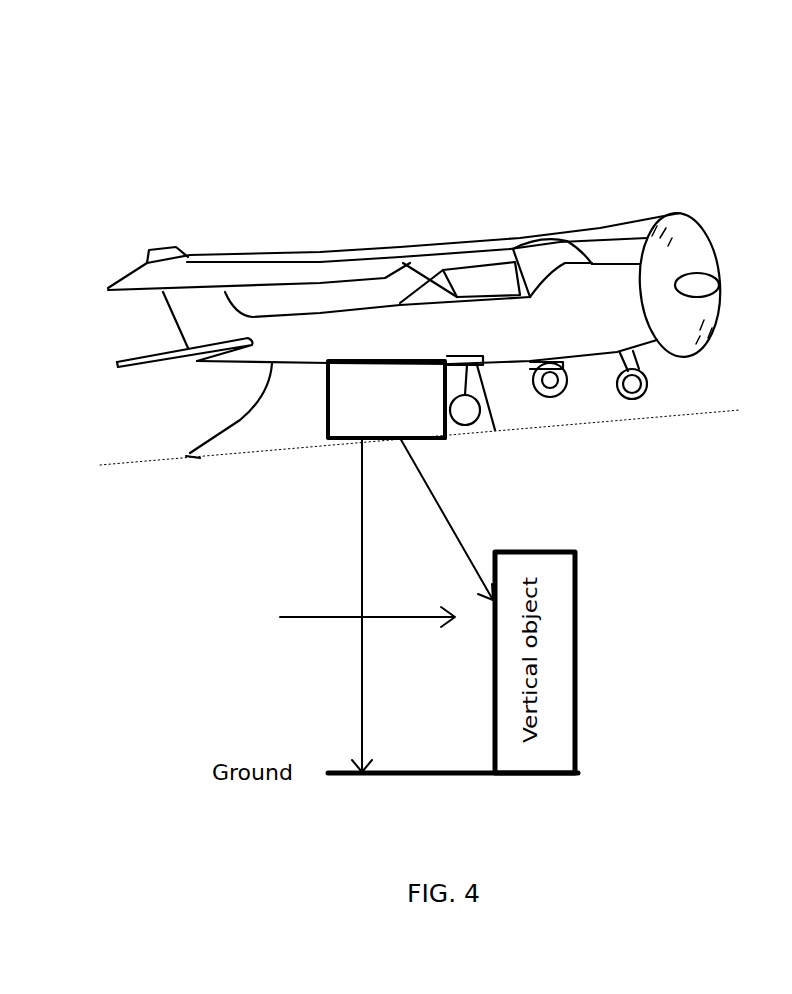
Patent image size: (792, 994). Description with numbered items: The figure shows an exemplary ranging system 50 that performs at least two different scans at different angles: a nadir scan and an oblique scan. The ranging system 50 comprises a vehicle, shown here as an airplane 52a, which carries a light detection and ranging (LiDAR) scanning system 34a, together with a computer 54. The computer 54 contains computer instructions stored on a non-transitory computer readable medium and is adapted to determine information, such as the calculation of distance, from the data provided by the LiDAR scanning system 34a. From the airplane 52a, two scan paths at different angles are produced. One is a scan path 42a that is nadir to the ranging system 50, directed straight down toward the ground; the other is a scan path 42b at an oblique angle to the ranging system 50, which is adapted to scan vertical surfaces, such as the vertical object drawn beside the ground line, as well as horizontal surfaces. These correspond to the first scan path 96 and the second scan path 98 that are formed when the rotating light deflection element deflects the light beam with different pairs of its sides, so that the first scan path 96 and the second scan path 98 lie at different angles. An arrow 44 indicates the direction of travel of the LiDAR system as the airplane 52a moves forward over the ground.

The ranging system 50 is at (604, 114).
The airplane 52a is at (209, 432).
The computer 54 is at (365, 360).
The LiDAR scanning system 34a is at (445, 437).
The scan path 42a is at (362, 518).
The second scan path 98 is at (303, 606).
The scan path 42b is at (453, 527).
The first scan path 96 is at (509, 519).
The arrow 44 is at (298, 620).